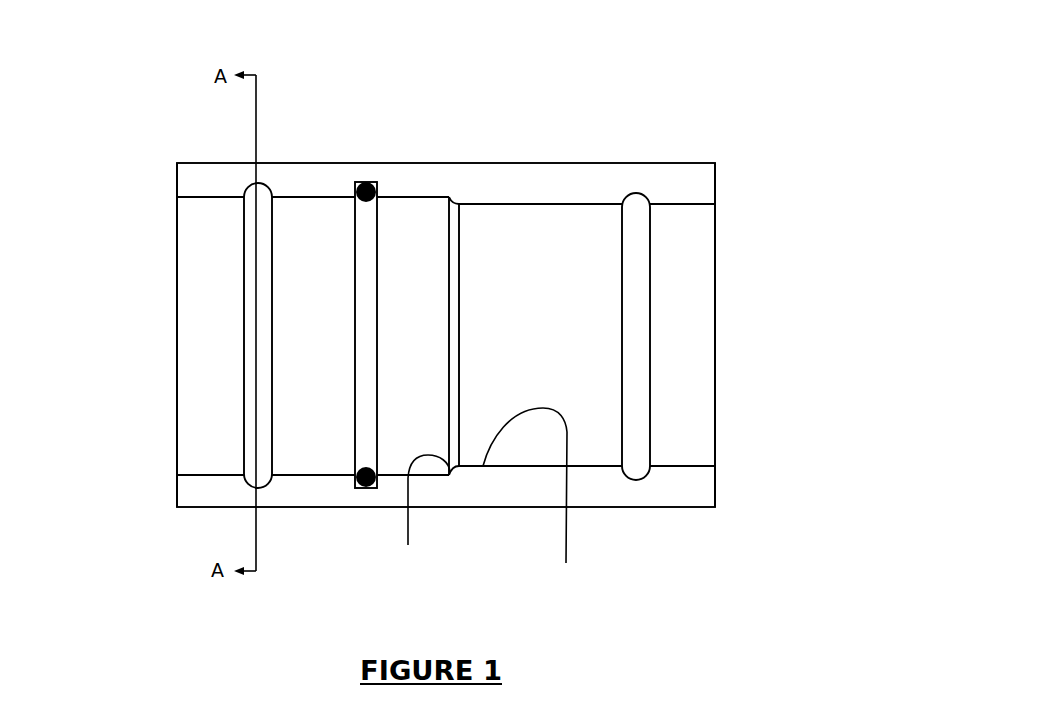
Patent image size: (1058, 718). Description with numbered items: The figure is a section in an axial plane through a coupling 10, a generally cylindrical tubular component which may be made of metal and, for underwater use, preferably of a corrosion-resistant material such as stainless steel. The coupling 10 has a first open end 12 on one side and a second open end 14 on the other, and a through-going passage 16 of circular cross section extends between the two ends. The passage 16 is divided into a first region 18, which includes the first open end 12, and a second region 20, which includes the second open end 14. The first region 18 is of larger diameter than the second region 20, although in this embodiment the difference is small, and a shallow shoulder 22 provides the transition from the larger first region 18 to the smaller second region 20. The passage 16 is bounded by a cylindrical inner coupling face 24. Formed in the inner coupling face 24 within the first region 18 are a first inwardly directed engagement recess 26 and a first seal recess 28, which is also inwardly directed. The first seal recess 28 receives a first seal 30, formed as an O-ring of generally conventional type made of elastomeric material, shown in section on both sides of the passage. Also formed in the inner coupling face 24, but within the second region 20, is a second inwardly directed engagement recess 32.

The coupling 10 is at (634, 133).
The first open end 12 is at (135, 323).
The second open end 14 is at (768, 316).
The through-going passage 16 is at (494, 346).
The first region 18 is at (322, 349).
The second region 20 is at (610, 346).
The shallow shoulder 22 is at (423, 517).
The inner coupling face 24 is at (531, 501).
The first inwardly directed engagement recess 26 is at (268, 185).
The first seal recess 28 is at (377, 240).
The first seal 30 is at (363, 182).
The second inwardly directed engagement recess 32 is at (648, 415).